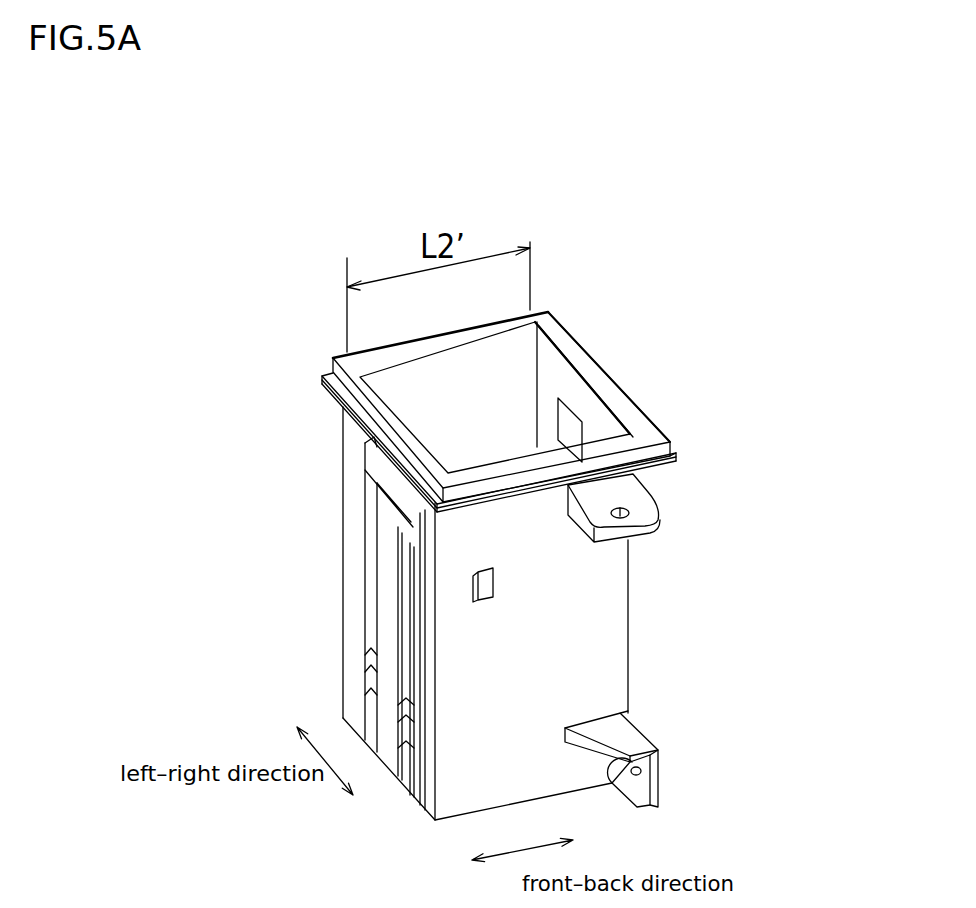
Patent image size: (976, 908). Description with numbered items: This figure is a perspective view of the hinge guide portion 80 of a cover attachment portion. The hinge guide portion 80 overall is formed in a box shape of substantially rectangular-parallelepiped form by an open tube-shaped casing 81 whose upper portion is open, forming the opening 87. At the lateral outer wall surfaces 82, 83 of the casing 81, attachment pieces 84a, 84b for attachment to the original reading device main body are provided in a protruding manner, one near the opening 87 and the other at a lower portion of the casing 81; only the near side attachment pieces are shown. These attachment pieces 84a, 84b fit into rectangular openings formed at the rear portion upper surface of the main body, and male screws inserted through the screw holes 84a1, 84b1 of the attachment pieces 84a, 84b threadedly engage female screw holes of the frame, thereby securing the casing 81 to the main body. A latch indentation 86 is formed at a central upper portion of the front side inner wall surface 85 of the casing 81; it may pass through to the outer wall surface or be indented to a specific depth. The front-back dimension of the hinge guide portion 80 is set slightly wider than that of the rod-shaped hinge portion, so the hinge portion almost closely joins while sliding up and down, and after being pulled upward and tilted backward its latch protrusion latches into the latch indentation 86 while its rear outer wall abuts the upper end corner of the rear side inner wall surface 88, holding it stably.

The hinge guide portion 80 is at (695, 639).
The casing 81 is at (634, 578).
The lateral outer wall surface 82 is at (632, 683).
The lateral outer wall surface 83 is at (441, 333).
The attachment piece 84a is at (644, 518).
The screw hole 84a1 is at (622, 507).
The attachment piece 84b is at (655, 784).
The screw hole 84b1 is at (623, 780).
The front side inner wall surface 85 is at (578, 400).
The latch indentation 86 is at (583, 437).
The opening 87 is at (557, 346).
The rear side inner wall surface 88 is at (428, 447).